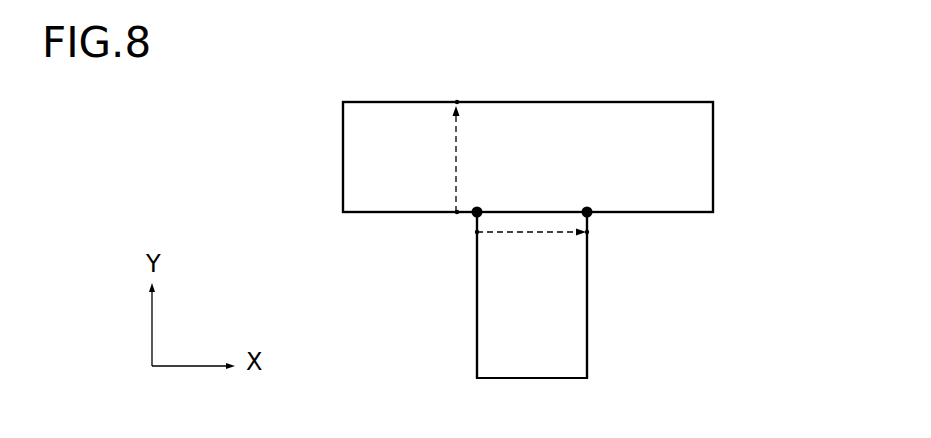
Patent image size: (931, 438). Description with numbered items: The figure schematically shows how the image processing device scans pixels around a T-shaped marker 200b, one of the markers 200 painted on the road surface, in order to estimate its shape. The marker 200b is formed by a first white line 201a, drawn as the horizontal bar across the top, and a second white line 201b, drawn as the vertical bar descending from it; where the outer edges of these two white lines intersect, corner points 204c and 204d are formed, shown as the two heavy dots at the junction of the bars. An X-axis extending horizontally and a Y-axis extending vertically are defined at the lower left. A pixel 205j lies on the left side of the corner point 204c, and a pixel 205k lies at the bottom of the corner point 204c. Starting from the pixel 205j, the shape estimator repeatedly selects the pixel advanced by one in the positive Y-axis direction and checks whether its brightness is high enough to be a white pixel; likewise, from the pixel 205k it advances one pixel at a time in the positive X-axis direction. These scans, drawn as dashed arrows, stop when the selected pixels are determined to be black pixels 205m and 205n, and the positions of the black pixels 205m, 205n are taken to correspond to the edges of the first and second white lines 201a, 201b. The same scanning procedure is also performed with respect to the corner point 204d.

The markers 200 is at (528, 205).
The marker having a T shape 200b is at (593, 102).
The first white line 201a is at (713, 153).
The second white line 201b is at (587, 318).
The corner point 204c is at (477, 212).
The corner point 204d is at (587, 212).
The pixel 205j is at (457, 212).
The pixel 205k is at (477, 232).
The black pixel 205m is at (457, 102).
The black pixel 205n is at (587, 232).